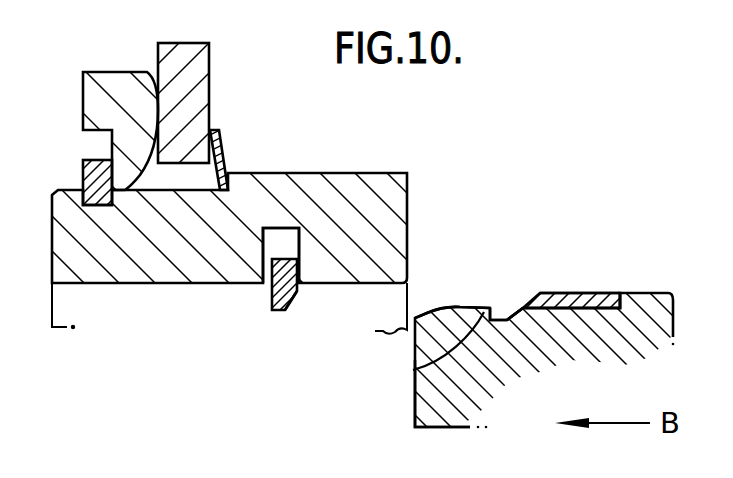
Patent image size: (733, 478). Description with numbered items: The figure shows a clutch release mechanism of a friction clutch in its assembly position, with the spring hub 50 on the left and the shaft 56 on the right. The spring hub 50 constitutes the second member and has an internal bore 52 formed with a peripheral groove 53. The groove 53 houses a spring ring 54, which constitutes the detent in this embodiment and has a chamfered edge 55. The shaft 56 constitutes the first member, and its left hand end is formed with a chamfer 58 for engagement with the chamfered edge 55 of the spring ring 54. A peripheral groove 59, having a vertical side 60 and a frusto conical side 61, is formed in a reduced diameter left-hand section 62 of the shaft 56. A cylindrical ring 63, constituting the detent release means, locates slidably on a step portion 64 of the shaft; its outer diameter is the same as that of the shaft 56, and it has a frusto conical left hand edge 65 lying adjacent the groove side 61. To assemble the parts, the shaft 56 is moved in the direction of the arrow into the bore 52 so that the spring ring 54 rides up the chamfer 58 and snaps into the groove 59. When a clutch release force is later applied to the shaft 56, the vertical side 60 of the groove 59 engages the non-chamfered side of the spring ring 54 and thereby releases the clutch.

The spring hub 50 is at (308, 174).
The internal bore 52 is at (82, 283).
The peripheral groove 53 is at (272, 243).
The spring ring 54 is at (281, 310).
The chamfered edge 55 is at (292, 302).
The shaft 56 is at (661, 322).
The chamfer 58 is at (435, 312).
The peripheral groove 59 is at (505, 307).
The vertical side 60 is at (434, 354).
The frusto conical side 61 is at (515, 320).
The reduced diameter left-hand section 62 is at (437, 395).
The cylindrical ring 63 is at (595, 296).
The step portion 64 is at (596, 310).
The frusto conical left hand edge 65 is at (523, 304).